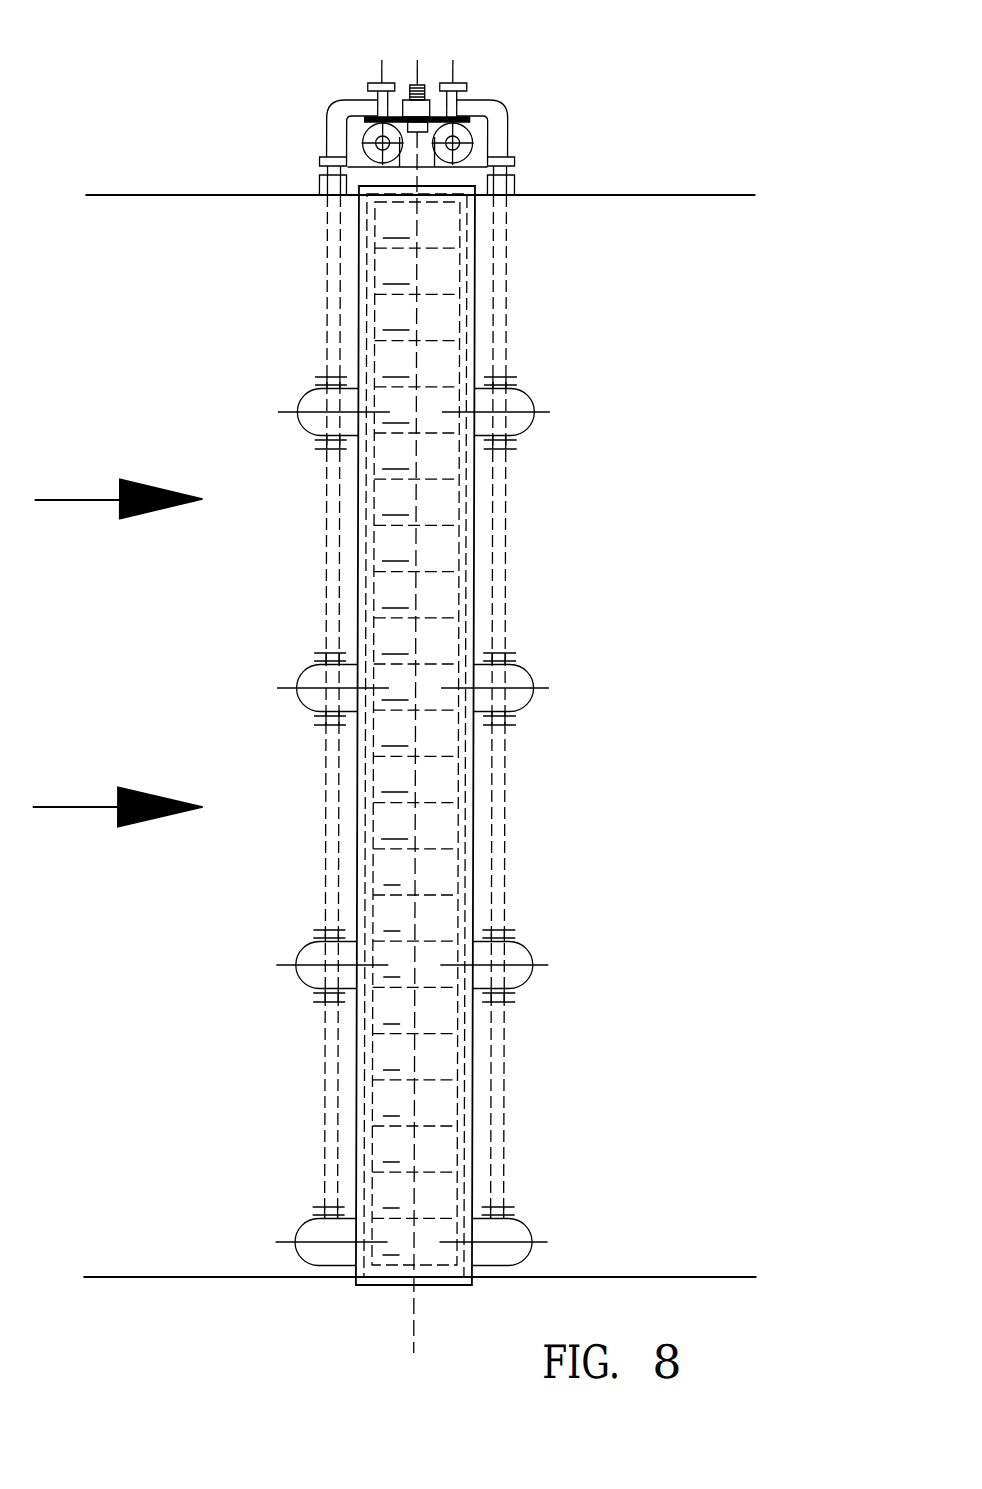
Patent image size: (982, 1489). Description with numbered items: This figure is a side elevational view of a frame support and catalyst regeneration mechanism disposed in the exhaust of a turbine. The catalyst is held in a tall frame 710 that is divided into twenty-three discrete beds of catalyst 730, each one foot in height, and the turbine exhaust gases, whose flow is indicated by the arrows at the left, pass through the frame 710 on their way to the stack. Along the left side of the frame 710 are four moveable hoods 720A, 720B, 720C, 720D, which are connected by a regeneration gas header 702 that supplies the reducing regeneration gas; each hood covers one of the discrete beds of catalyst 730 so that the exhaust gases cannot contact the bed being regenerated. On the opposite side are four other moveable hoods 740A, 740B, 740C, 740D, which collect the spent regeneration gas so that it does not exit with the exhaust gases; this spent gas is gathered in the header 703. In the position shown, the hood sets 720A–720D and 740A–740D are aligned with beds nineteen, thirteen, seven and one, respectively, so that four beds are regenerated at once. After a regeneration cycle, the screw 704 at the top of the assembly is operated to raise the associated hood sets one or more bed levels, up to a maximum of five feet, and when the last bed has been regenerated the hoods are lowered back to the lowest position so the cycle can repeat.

The regeneration gas header 702 is at (330, 108).
The header 703 is at (503, 108).
The screw 704 is at (428, 100).
The frame 710 is at (486, 735).
The moveable hood 720A is at (312, 393).
The moveable hood 720B is at (312, 668).
The moveable hood 720C is at (312, 946).
The moveable hood 720D is at (313, 1223).
The discrete beds of catalyst 730 is at (441, 602).
The moveable hood 740A is at (534, 395).
The moveable hood 740B is at (535, 666).
The moveable hood 740C is at (528, 946).
The moveable hood 740D is at (529, 1225).